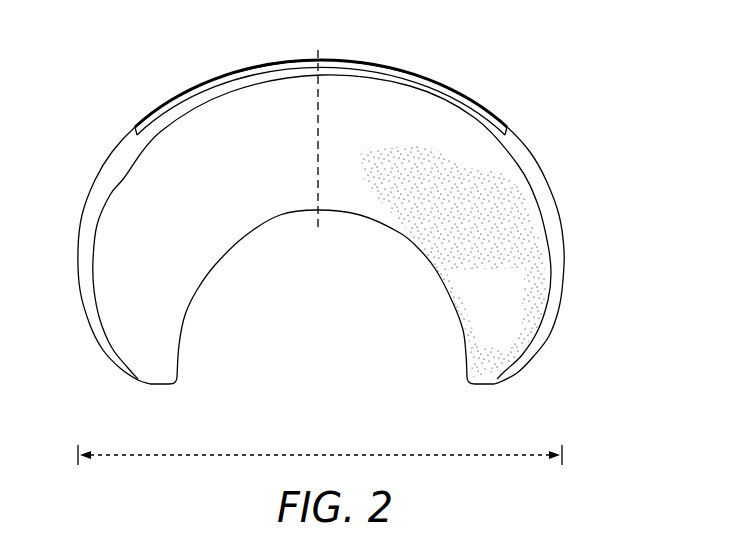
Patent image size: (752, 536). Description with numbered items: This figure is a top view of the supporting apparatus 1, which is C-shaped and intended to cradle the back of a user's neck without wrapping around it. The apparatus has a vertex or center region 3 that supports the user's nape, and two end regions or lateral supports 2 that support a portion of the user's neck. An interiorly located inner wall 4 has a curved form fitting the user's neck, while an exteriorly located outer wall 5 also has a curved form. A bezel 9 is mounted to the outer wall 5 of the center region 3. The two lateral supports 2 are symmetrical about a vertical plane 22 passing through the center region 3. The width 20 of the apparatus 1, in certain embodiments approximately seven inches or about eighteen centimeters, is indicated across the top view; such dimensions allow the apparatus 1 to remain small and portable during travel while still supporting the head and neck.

The supporting apparatus 1 is at (374, 250).
The lateral supports 2 is at (183, 351).
The center region 3 is at (298, 198).
The inner wall 4 is at (245, 237).
The outer wall 5 is at (112, 153).
The bezel 9 is at (424, 72).
The width 20 is at (320, 468).
The vertical plane 22 is at (330, 125).